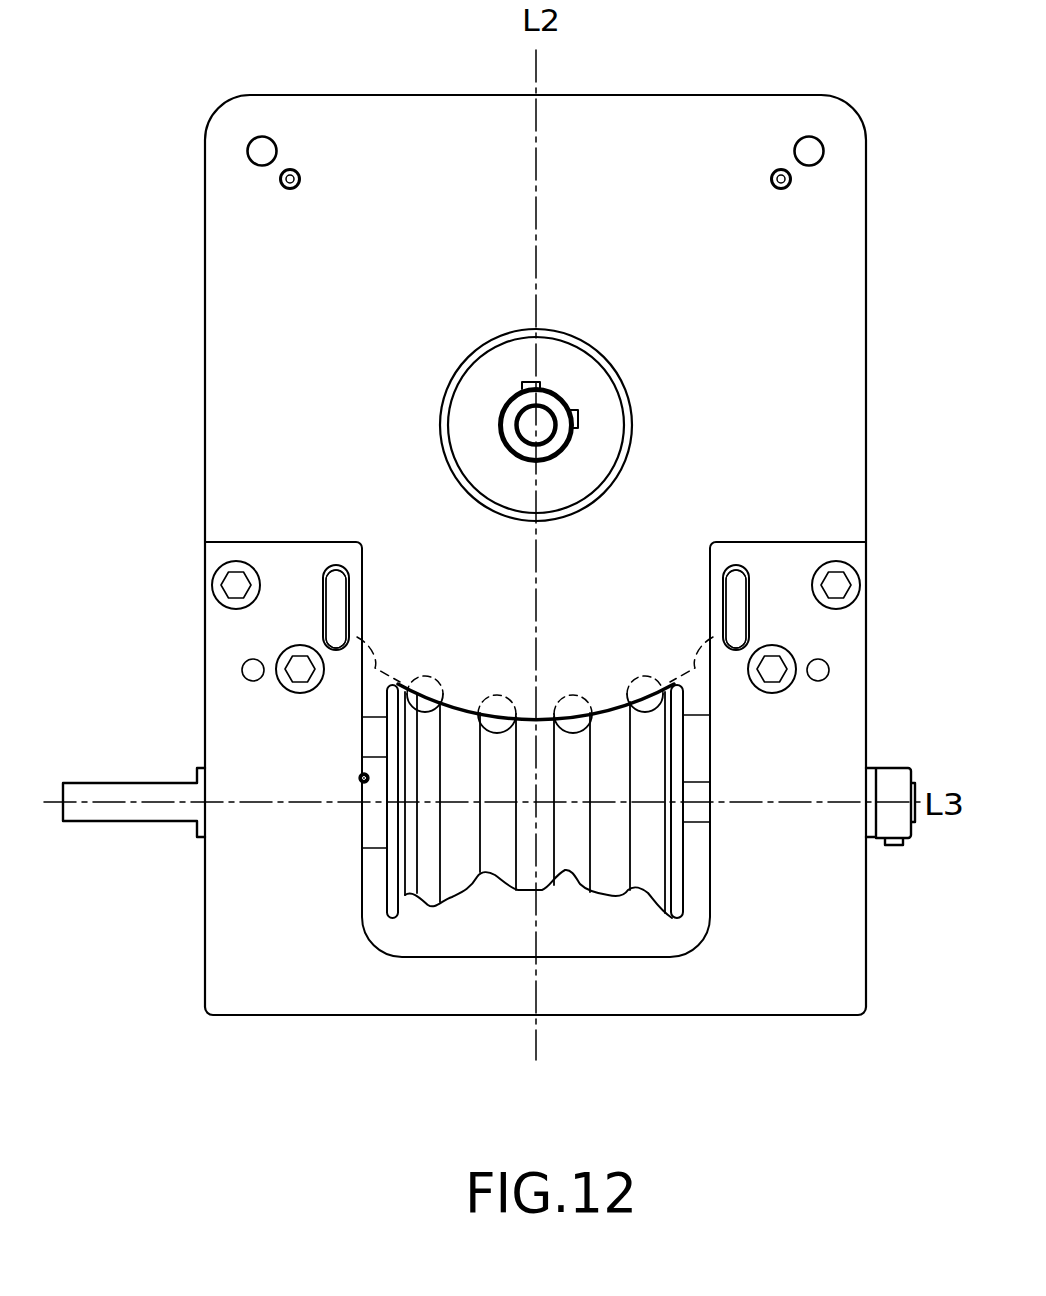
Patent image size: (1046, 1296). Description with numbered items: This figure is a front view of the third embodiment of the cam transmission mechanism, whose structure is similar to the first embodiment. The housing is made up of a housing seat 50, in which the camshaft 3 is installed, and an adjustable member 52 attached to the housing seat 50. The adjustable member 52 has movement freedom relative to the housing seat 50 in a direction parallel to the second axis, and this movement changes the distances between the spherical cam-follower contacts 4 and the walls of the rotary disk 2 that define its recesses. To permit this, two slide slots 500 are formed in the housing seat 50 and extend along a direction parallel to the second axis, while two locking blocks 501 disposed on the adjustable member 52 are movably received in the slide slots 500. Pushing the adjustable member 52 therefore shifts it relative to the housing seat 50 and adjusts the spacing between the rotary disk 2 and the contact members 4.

The adjustable member 52 is at (853, 238).
The housing seat 50 is at (397, 997).
The slide slots 500 is at (330, 593).
The locking blocks 501 is at (340, 612).
The cam-follower contacts 4 is at (499, 726).
The rotary disk 2 is at (695, 668).
The camshaft 3 is at (605, 884).